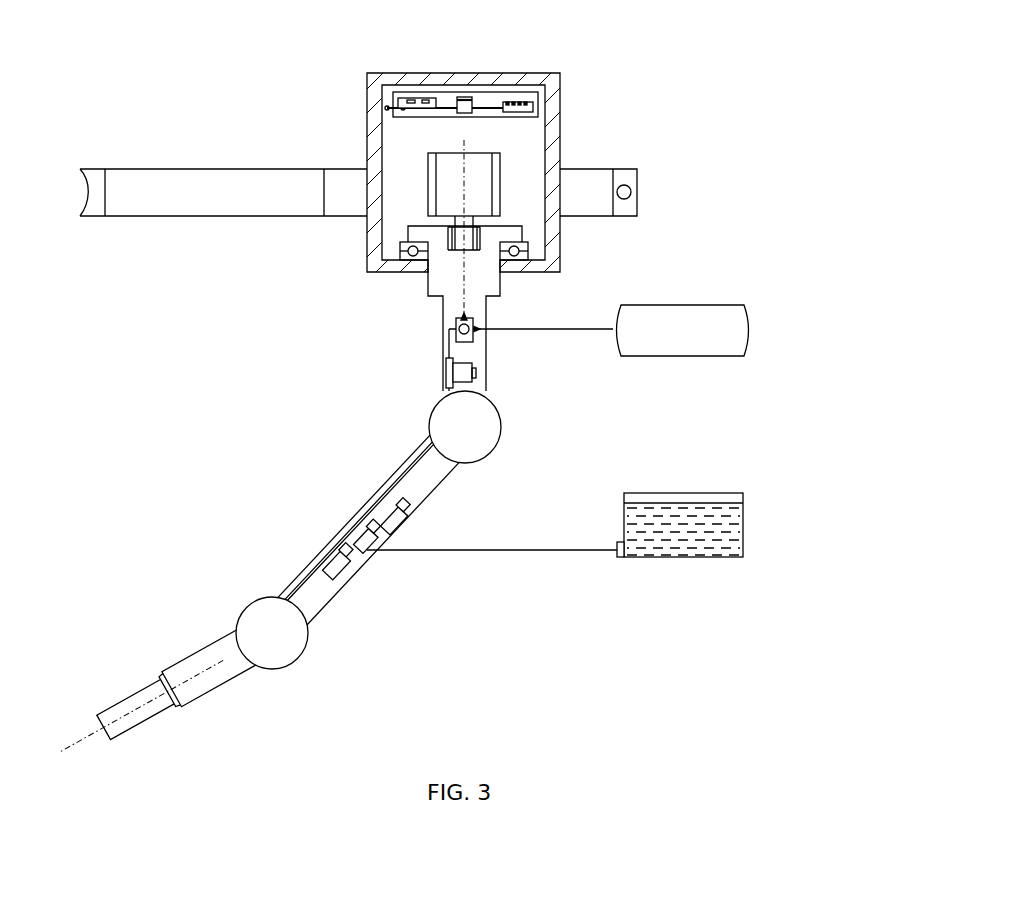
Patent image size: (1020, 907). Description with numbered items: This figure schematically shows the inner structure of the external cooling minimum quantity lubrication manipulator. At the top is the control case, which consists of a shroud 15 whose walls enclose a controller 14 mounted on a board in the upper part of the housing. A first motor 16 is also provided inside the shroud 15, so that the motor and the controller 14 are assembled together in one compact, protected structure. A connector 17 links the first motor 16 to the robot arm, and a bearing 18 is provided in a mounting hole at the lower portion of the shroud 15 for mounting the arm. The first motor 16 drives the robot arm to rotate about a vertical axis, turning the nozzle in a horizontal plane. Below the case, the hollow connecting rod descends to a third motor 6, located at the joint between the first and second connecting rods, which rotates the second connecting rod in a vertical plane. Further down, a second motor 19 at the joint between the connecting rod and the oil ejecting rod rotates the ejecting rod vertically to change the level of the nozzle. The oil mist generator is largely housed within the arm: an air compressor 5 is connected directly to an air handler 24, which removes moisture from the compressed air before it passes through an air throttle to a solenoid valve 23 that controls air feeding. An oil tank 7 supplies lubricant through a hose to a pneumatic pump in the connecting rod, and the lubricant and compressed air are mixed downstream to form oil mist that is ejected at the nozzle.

The air compressor 5 is at (738, 322).
The third motor 6 is at (644, 418).
The oil tank 7 is at (617, 513).
The controller 14 is at (481, 60).
The shroud 15 is at (519, 139).
The first motor 16 is at (614, 143).
The connector 17 is at (622, 198).
The bearing 18 is at (628, 233).
The second motor 19 is at (545, 647).
The solenoid valve 23 is at (317, 365).
The air handler 24 is at (393, 315).